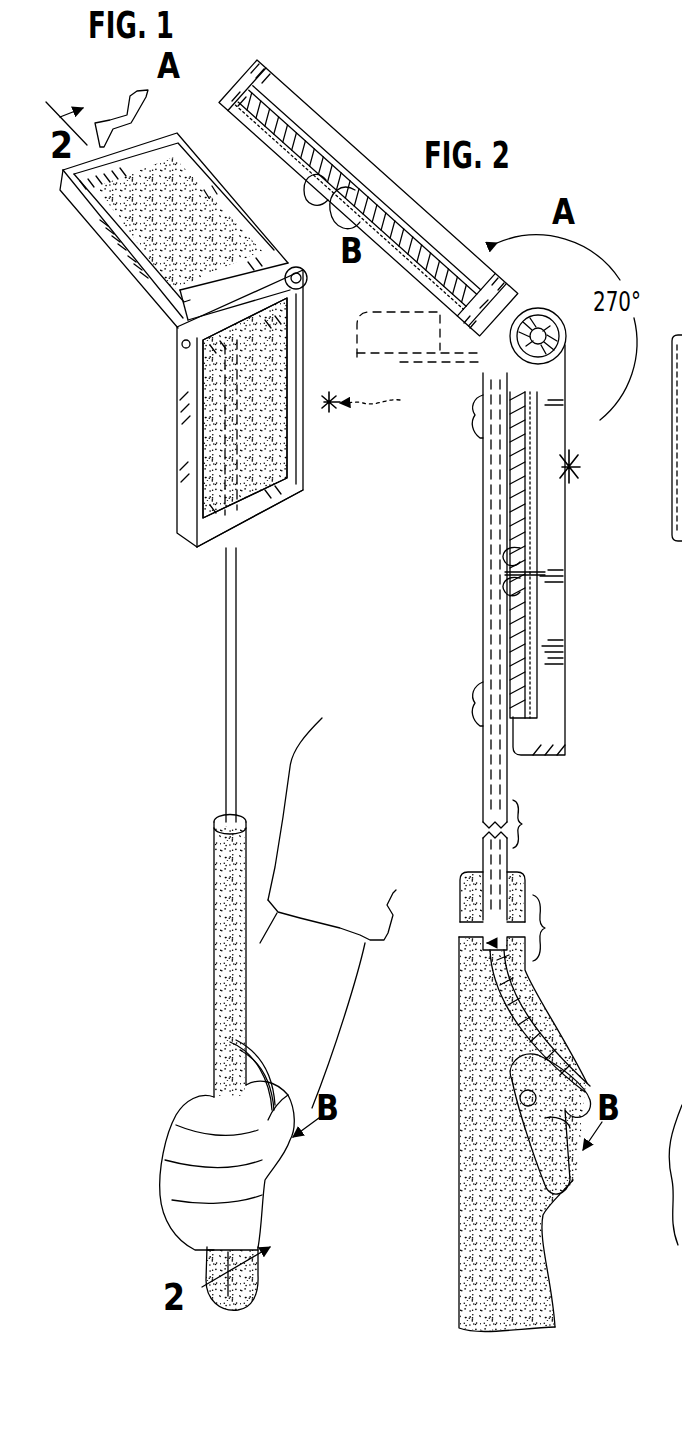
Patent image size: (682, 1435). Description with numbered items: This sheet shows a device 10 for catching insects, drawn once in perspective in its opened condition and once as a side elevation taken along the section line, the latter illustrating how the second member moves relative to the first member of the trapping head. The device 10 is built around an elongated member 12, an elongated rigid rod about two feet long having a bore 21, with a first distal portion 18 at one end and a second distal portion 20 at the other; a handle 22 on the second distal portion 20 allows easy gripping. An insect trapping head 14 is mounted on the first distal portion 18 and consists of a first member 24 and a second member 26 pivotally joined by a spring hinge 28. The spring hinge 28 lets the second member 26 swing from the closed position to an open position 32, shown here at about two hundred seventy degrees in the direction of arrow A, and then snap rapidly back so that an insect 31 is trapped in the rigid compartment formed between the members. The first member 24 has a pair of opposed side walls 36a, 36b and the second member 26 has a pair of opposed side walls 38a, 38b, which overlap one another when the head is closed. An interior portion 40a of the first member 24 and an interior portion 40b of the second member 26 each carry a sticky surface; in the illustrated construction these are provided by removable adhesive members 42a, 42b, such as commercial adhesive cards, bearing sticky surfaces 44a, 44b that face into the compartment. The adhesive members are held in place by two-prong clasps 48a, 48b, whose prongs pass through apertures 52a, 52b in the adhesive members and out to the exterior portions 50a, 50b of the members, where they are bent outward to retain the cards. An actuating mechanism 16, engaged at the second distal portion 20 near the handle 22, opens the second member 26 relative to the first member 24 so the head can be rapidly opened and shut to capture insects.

In FIG. 1, the device 10 is at (125, 397).
In FIG. 2, the device 10 is at (466, 484).
In FIG. 1, the elongated member 12 is at (227, 621).
In FIG. 2, the elongated member 12 is at (510, 851).
In FIG. 1, the insect trapping head 14 is at (180, 433).
In FIG. 1, the actuating mechanism 16 is at (280, 1165).
In FIG. 2, the actuating mechanism 16 is at (592, 1096).
In FIG. 1, the first distal portion 18 is at (212, 457).
In FIG. 1, the second distal portion 20 is at (270, 1202).
In FIG. 2, the bore 21 is at (487, 794).
In FIG. 1, the handle 22 is at (257, 1288).
In FIG. 2, the handle 22 is at (540, 1311).
In FIG. 1, the first member 24 is at (303, 477).
In FIG. 2, the first member 24 is at (568, 753).
In FIG. 1, the second member 26 is at (113, 263).
In FIG. 2, the second member 26 is at (385, 190).
In FIG. 2, the spring hinge 28 is at (556, 363).
In FIG. 2, the insect 31 is at (587, 470).
In FIG. 2, the open position 32 is at (583, 598).
In FIG. 1, the side wall of first member 36a is at (292, 432).
In FIG. 1, the side wall of first member 36b is at (170, 300).
In FIG. 1, the side wall of second member 38a is at (180, 148).
In FIG. 1, the side wall of second member 38b is at (113, 207).
In FIG. 2, the interior portion of first member 40a is at (552, 725).
In FIG. 2, the interior portion of second member 40b is at (293, 112).
In FIG. 2, the removable adhesive member 42a is at (520, 691).
In FIG. 2, the removable adhesive member 42b is at (262, 103).
In FIG. 2, the sticky surface 44a is at (533, 644).
In FIG. 2, the sticky surface 44b is at (437, 258).
In FIG. 2, the two-prong clasp 48a is at (540, 561).
In FIG. 2, the two-prong clasp 48b is at (380, 212).
In FIG. 2, the exterior portion of first member 50a is at (455, 560).
In FIG. 2, the exterior portion of second member 50b is at (383, 255).
In FIG. 2, the aperture in adhesive member 52a is at (545, 574).
In FIG. 2, the aperture in adhesive member 52b is at (346, 173).